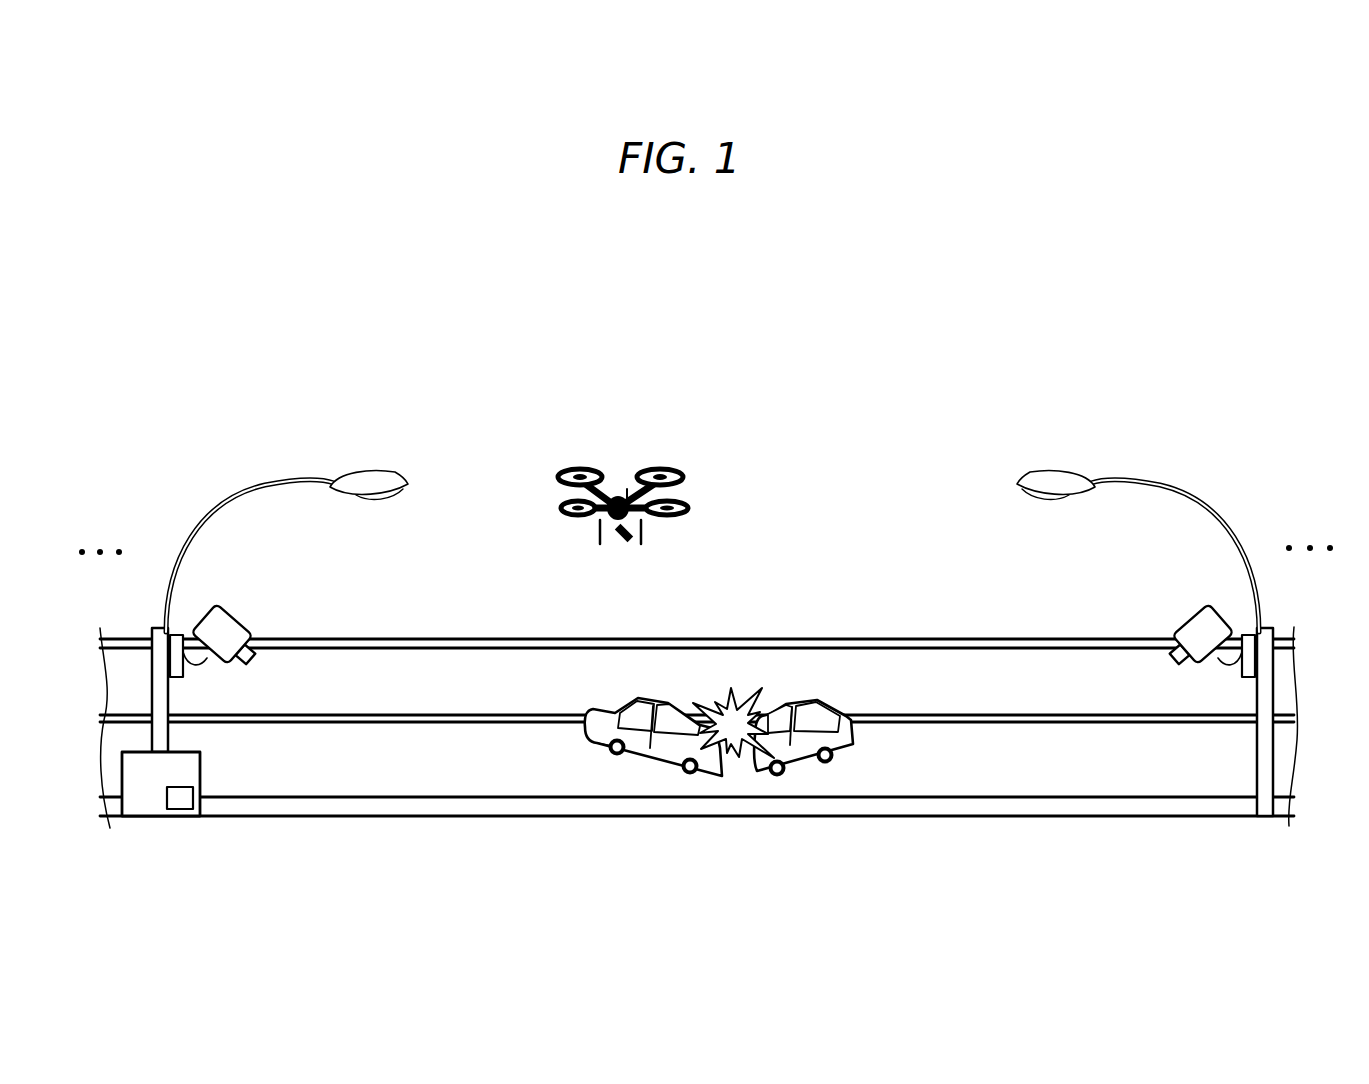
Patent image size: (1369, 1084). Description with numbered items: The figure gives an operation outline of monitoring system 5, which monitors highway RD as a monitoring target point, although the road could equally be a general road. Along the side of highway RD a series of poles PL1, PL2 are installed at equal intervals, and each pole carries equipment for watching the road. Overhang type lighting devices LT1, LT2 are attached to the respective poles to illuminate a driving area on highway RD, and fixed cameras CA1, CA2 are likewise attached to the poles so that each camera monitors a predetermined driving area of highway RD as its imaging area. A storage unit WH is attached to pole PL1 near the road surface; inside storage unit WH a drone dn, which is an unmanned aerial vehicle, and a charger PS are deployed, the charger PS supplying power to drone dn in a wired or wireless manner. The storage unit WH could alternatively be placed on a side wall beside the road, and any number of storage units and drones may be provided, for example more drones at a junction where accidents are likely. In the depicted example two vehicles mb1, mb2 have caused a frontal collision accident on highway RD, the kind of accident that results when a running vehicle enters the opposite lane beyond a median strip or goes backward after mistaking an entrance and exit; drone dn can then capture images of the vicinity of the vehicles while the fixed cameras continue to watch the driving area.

The monitoring system 5 is at (895, 395).
The highway RD is at (427, 667).
The pole PL1 is at (152, 683).
The pole PL2 is at (1267, 704).
The lighting device LT1 is at (358, 472).
The lighting device LT2 is at (1063, 471).
The fixed camera CA1 is at (234, 612).
The fixed camera CA2 is at (1205, 622).
The storage unit WH is at (200, 762).
The charger PS is at (184, 807).
The drone dn is at (673, 493).
The vehicle mb1 is at (593, 742).
The vehicle mb2 is at (843, 740).